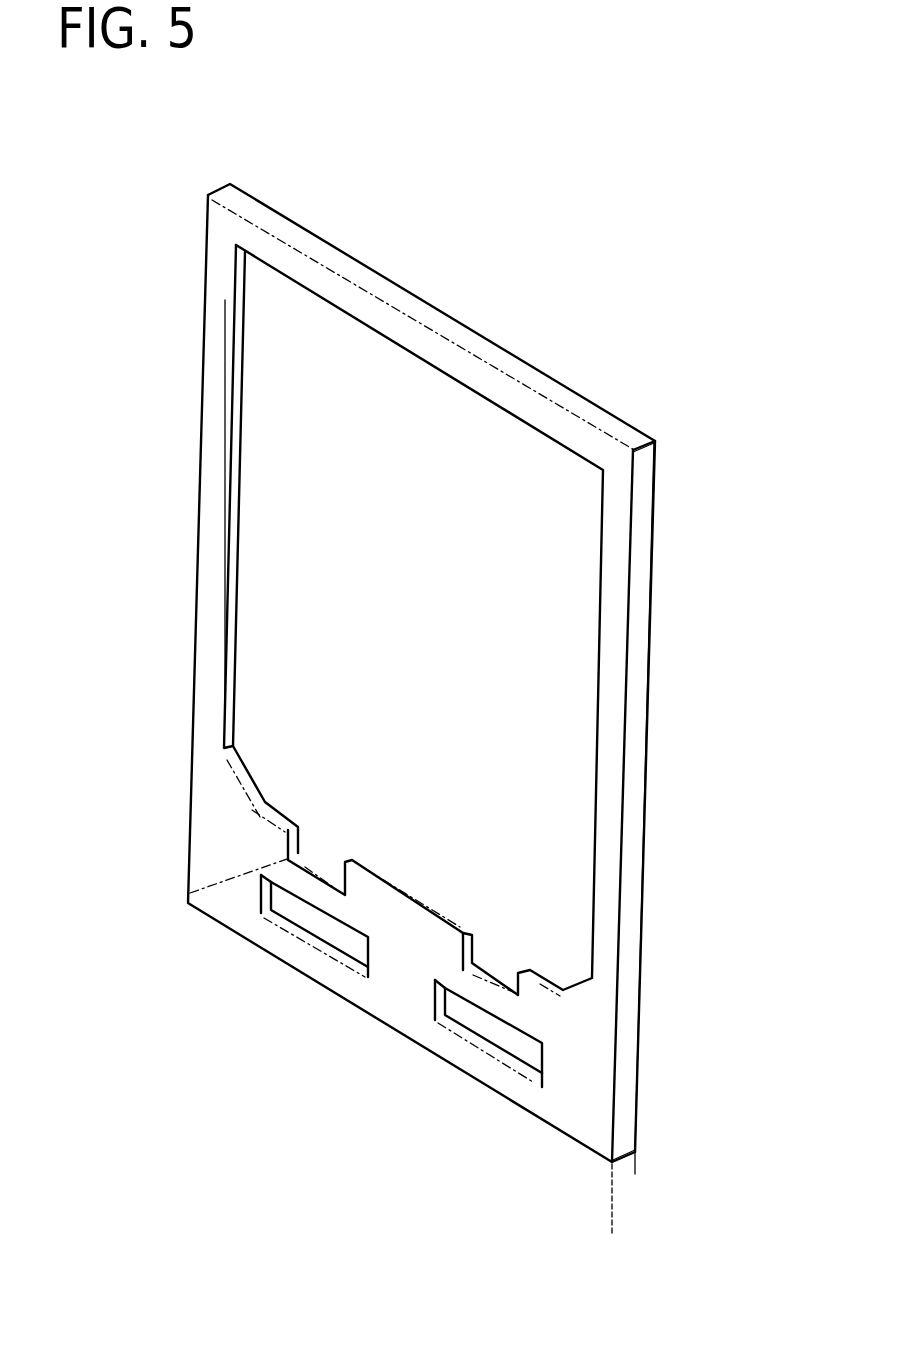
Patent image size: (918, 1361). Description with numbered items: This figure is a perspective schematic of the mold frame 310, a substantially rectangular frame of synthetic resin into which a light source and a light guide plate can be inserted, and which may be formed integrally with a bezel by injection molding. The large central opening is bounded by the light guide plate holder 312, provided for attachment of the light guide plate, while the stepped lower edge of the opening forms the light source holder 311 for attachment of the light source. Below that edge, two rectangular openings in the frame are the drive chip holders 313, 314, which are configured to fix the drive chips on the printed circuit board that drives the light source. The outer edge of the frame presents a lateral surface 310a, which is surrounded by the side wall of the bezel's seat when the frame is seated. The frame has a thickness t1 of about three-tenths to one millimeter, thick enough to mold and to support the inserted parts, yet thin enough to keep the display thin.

The mold frame 310 is at (710, 383).
The lateral surface of the mold frame 310a is at (648, 748).
The light source holder 311 is at (190, 893).
The light guide plate holder 312 is at (223, 655).
The drive chip holder 313 is at (310, 938).
The drive chip holder 314 is at (477, 1042).
The thickness of the mold frame t1 is at (590, 1243).